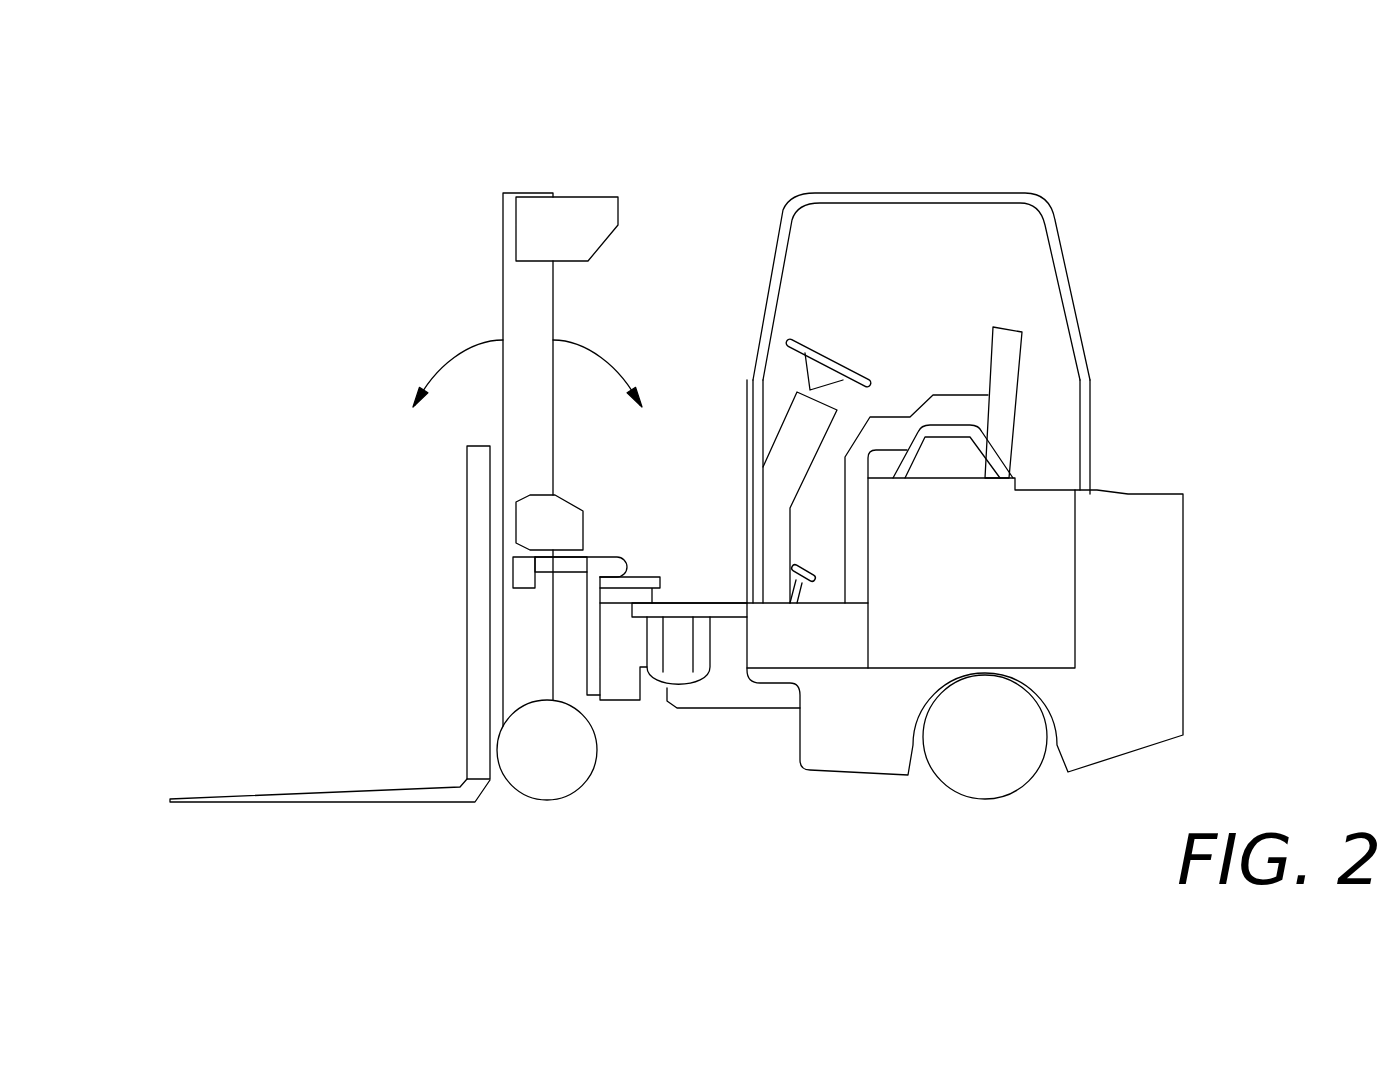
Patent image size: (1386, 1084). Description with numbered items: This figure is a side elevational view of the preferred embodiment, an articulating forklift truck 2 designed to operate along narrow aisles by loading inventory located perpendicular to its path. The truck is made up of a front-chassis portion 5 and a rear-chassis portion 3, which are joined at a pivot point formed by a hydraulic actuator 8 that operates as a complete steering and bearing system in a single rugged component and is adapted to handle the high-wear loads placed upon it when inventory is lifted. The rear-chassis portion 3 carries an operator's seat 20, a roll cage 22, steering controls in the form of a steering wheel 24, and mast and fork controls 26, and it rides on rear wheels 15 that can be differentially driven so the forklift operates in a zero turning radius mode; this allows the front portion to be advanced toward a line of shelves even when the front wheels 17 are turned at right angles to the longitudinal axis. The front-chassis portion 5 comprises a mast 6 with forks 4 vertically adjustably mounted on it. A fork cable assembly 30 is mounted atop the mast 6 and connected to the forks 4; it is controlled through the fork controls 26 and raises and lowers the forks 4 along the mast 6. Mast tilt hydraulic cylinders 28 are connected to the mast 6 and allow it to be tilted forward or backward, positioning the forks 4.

The articulating forklift truck 2 is at (232, 127).
The rear-chassis portion 3 is at (1154, 372).
The forks 4 is at (278, 795).
The front-chassis portion 5 is at (398, 450).
The mast 6 is at (503, 315).
The hydraulic actuator 8 is at (673, 645).
The rear wheels 15 is at (980, 750).
The front wheels 17 is at (565, 770).
The operator's seat 20 is at (995, 327).
The roll cage 22 is at (853, 193).
The steering controls (steering wheel) 24 is at (820, 353).
The mast and fork controls 26 is at (922, 400).
The mast tilt hydraulic cylinders 28 is at (513, 573).
The fork cable assembly 30 is at (618, 197).